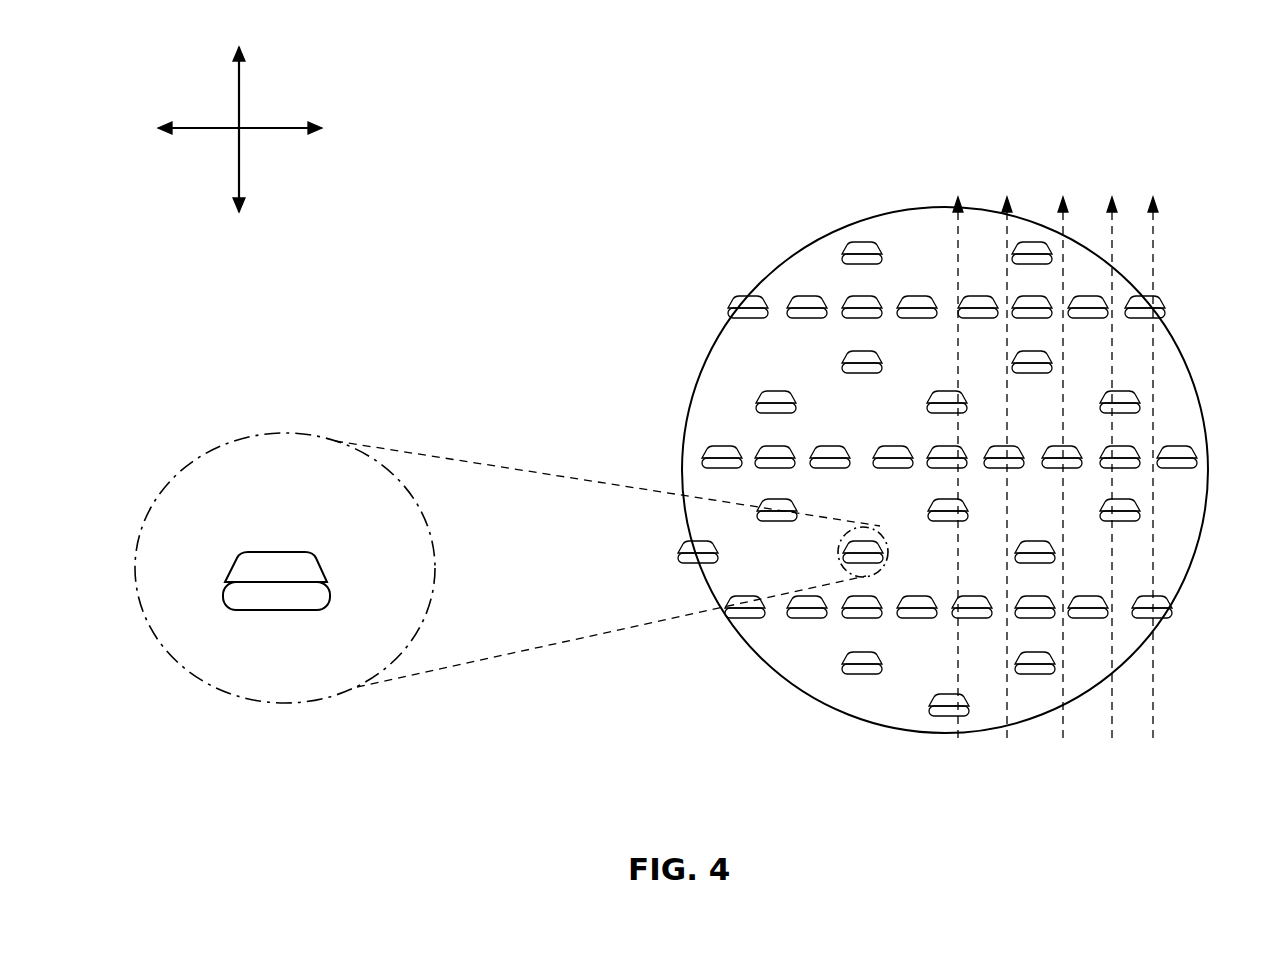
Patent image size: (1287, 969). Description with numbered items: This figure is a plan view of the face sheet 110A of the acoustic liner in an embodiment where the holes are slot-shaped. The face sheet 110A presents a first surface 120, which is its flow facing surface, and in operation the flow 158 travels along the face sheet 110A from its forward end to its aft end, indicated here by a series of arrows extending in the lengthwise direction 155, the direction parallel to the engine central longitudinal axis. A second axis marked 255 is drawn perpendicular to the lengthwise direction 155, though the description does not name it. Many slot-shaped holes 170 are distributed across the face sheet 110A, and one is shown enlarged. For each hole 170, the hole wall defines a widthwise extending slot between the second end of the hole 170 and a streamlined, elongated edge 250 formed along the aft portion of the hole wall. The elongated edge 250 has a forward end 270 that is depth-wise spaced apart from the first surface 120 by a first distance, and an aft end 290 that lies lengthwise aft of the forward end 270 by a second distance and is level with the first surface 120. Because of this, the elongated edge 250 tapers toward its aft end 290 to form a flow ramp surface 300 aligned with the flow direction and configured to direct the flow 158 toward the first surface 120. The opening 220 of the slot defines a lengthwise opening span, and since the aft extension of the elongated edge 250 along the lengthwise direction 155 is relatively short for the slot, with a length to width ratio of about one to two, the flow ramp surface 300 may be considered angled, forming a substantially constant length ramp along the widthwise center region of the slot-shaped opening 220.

The face sheet 110A is at (1180, 562).
The first surface 120 is at (1102, 657).
The lengthwise direction 155 is at (240, 166).
The flow 158 is at (1063, 200).
The hole 170 is at (320, 588).
The opening 220 is at (277, 595).
The elongated edge 250 is at (262, 557).
The first direction 255 is at (290, 126).
The forward end 270 is at (228, 572).
The aft end 290 is at (308, 550).
The flow ramp surface 300 is at (283, 570).